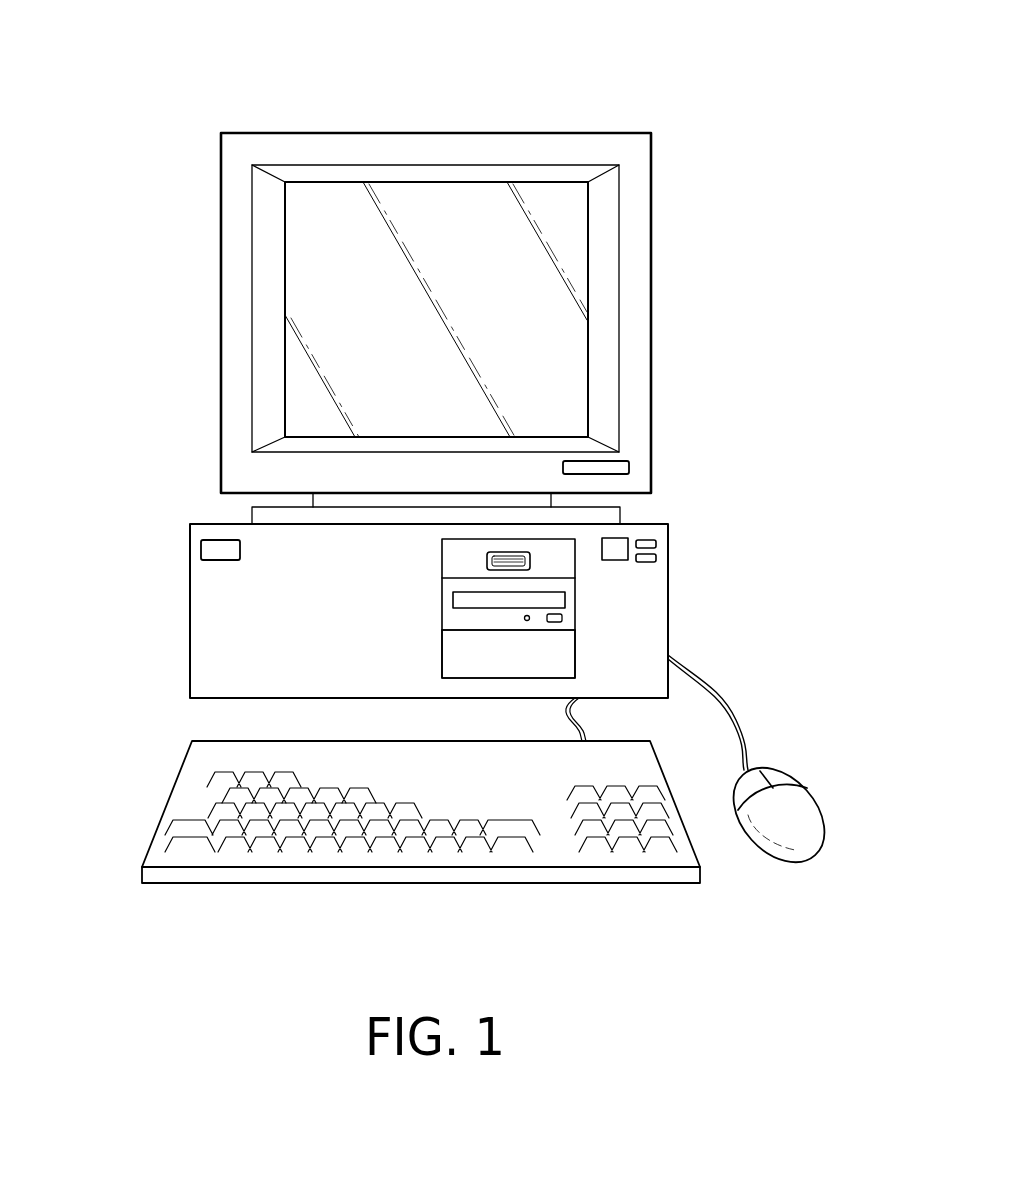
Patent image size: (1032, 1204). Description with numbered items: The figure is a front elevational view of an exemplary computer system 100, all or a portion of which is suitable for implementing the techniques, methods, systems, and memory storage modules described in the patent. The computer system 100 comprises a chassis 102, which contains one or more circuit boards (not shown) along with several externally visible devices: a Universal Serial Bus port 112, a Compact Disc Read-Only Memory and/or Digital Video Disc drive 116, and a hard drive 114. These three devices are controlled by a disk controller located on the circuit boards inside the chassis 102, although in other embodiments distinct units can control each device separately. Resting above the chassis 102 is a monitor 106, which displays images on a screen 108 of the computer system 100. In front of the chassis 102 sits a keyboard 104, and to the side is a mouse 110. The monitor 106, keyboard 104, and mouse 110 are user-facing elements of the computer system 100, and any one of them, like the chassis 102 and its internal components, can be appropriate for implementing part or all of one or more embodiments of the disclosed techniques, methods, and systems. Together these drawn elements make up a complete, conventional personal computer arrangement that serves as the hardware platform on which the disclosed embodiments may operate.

The computer system 100 is at (652, 97).
The chassis 102 is at (189, 612).
The keyboard 104 is at (167, 800).
The monitor 106 is at (308, 133).
The screen 108 is at (340, 316).
The mouse 110 is at (803, 800).
The Universal Serial Bus (USB) port 112 is at (530, 556).
The hard drive 114 is at (565, 654).
The Compact Disc Read-Only Memory (CD-ROM) and/or Digital Video Disc (DVD) drive 116 is at (575, 607).